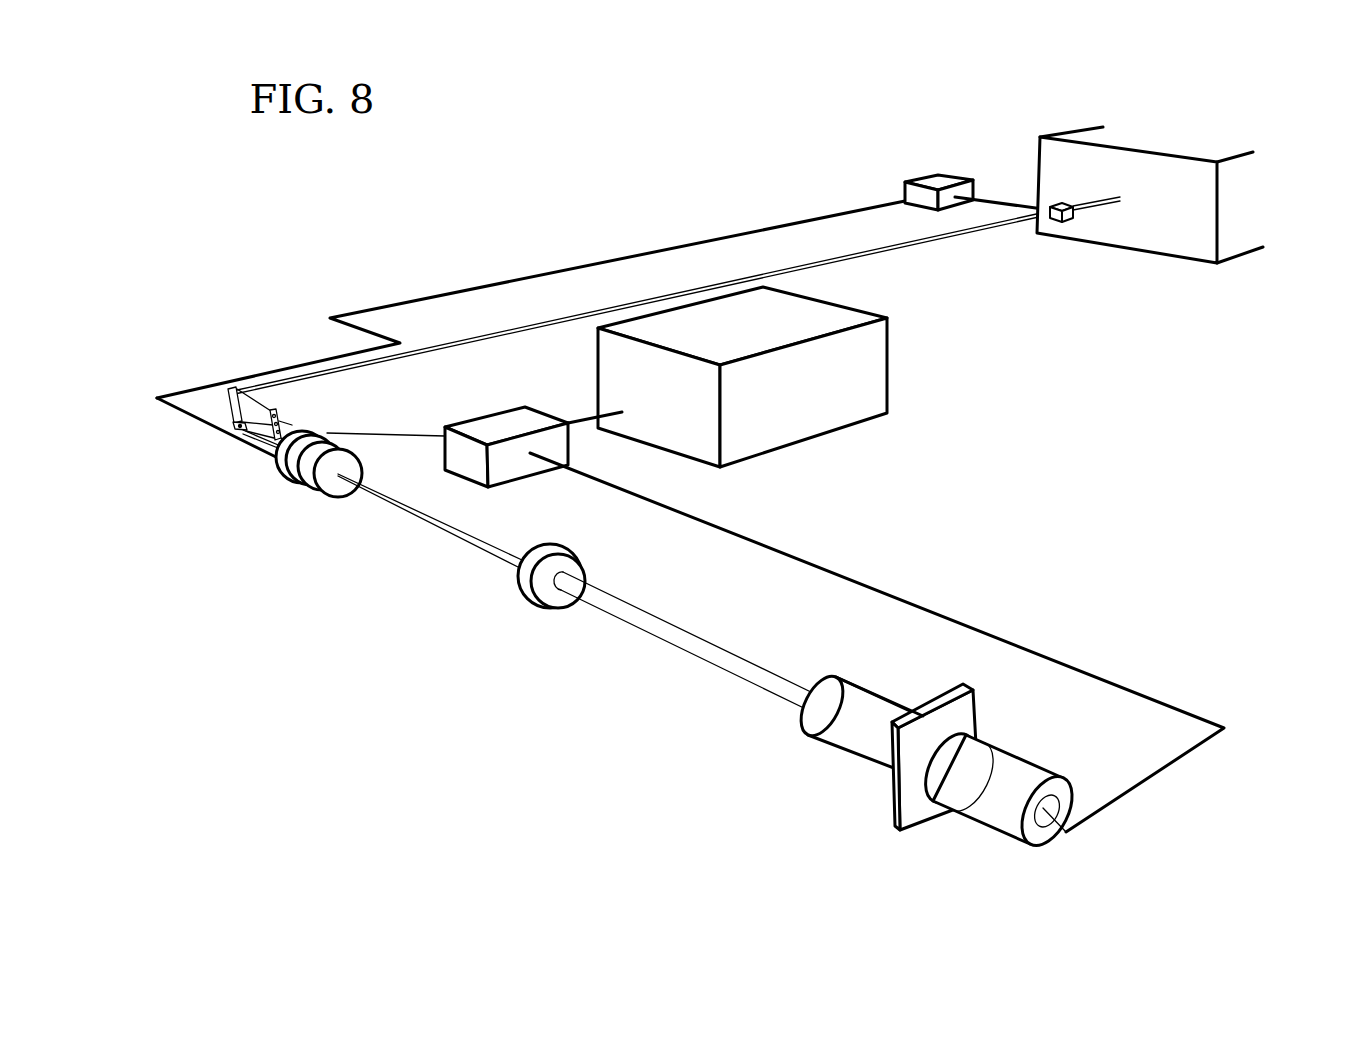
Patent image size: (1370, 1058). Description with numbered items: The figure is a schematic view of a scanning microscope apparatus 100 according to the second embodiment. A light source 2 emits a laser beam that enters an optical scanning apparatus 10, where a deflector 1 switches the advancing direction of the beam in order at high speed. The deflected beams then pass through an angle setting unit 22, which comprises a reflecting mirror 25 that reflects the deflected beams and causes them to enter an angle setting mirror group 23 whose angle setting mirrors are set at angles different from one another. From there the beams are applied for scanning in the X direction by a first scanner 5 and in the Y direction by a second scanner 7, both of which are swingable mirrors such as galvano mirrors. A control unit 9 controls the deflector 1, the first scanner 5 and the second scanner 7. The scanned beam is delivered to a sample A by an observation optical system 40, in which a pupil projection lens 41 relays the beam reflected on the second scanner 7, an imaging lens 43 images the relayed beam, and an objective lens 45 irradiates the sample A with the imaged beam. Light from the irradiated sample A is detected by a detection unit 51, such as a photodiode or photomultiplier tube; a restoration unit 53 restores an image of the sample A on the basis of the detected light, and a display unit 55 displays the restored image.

The scanning microscope apparatus 100 is at (1252, 90).
The optical scanning apparatus 10 is at (587, 162).
The deflector 1 is at (1068, 228).
The light source 2 is at (1170, 240).
The control unit 9 is at (933, 178).
The angle setting unit 22 is at (203, 373).
The reflecting mirror 25 is at (232, 389).
The angle setting mirror group 23 is at (295, 413).
The second scanner 7 is at (230, 420).
The first scanner 5 is at (243, 445).
The restoration unit 53 is at (520, 402).
The display unit 55 is at (890, 362).
The observation optical system 40 is at (250, 562).
The pupil projection lens 41 is at (322, 497).
The imaging lens 43 is at (528, 604).
The objective lens 45 is at (823, 745).
The sample A is at (892, 826).
The detection unit 51 is at (970, 820).